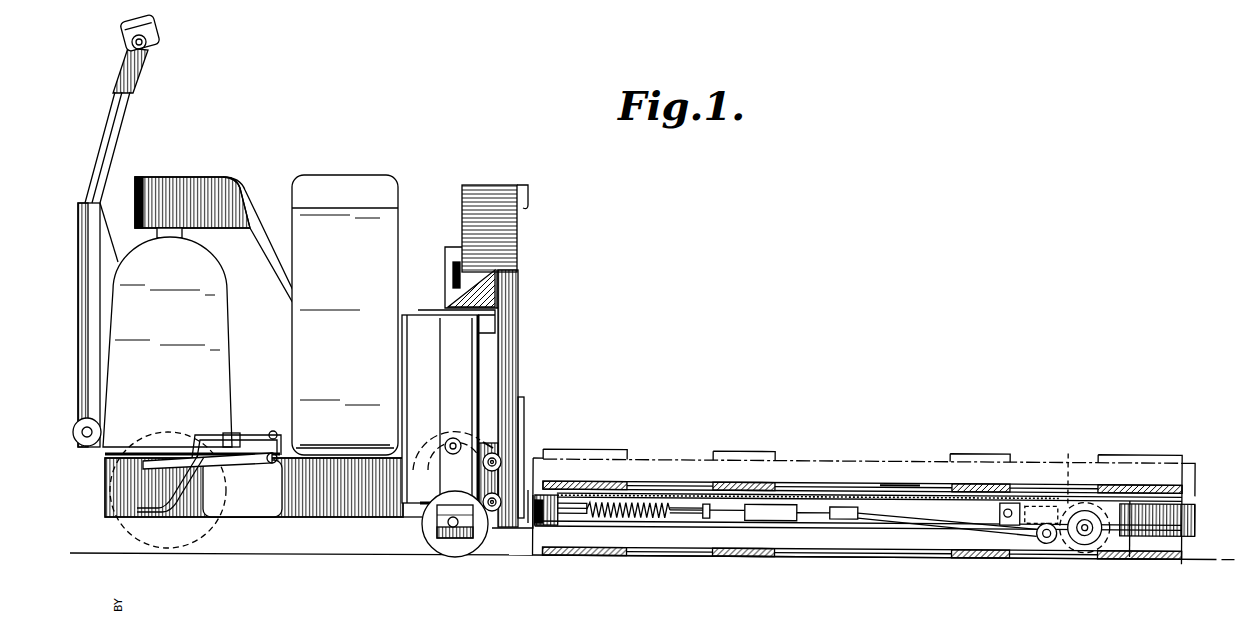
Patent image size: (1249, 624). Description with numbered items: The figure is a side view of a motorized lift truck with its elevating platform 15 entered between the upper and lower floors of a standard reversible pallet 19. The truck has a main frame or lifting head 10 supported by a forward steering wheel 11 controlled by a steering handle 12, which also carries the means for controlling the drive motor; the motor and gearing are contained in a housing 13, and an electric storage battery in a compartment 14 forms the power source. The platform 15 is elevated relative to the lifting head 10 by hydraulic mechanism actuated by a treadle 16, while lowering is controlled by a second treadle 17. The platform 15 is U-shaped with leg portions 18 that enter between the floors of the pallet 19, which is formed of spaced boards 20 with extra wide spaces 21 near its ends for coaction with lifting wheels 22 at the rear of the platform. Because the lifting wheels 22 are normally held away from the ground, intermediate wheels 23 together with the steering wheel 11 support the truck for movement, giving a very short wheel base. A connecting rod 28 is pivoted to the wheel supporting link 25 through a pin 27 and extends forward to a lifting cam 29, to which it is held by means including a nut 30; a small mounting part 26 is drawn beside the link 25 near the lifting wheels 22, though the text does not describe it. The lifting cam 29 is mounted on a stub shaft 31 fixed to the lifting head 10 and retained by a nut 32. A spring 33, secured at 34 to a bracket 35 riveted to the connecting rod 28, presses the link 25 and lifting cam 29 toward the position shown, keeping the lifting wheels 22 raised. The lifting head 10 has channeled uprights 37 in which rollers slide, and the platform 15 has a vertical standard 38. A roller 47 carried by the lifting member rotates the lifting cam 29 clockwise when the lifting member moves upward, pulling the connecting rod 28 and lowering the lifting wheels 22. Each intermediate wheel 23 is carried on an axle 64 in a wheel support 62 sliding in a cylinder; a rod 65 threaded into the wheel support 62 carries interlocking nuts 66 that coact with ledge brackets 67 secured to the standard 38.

The lifting head 10 is at (327, 520).
The steering wheel 11 is at (175, 540).
The steering handle 12 is at (112, 135).
The housing 13 is at (175, 326).
The compartment 14 is at (350, 341).
The elevating platform 15 is at (527, 413).
The treadle 16 is at (243, 462).
The second treadle 17 is at (140, 520).
The leg portions 18 is at (800, 495).
The pallet 19 is at (905, 481).
The spaced boards 20 is at (605, 481).
The extra wide spaces 21 is at (672, 557).
The lifting wheels 22 is at (1082, 545).
The intermediate wheels 23 is at (432, 548).
The link 25 is at (1066, 472).
The bracket 26 is at (1006, 522).
The pin 27 is at (1040, 540).
The connecting rod 28 is at (533, 522).
The lifting cam 29 is at (440, 410).
The nut 30 is at (492, 512).
The stub shaft 31 is at (498, 464).
The nut 32 is at (493, 448).
The spring 33 is at (633, 518).
The securing point 34 is at (570, 514).
The bracket 35 is at (548, 527).
The channeled uprights 37 is at (517, 230).
The vertical standard 38 is at (518, 347).
The roller 47 is at (447, 455).
The wheel support 62 is at (450, 522).
The axle 64 is at (456, 530).
The rod 65 is at (453, 275).
The interlocking nuts 66 is at (450, 300).
The ledge brackets 67 is at (500, 294).